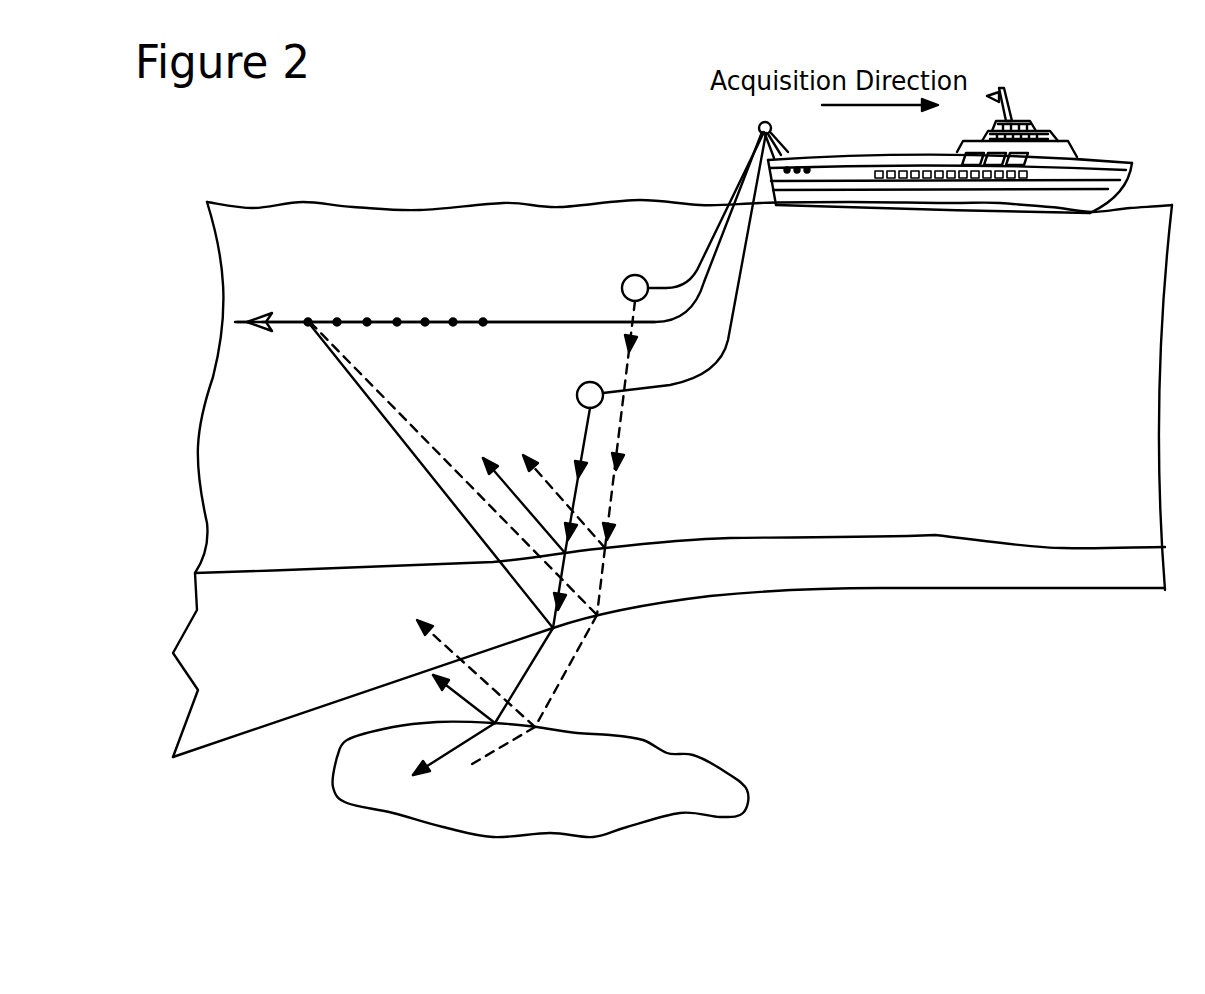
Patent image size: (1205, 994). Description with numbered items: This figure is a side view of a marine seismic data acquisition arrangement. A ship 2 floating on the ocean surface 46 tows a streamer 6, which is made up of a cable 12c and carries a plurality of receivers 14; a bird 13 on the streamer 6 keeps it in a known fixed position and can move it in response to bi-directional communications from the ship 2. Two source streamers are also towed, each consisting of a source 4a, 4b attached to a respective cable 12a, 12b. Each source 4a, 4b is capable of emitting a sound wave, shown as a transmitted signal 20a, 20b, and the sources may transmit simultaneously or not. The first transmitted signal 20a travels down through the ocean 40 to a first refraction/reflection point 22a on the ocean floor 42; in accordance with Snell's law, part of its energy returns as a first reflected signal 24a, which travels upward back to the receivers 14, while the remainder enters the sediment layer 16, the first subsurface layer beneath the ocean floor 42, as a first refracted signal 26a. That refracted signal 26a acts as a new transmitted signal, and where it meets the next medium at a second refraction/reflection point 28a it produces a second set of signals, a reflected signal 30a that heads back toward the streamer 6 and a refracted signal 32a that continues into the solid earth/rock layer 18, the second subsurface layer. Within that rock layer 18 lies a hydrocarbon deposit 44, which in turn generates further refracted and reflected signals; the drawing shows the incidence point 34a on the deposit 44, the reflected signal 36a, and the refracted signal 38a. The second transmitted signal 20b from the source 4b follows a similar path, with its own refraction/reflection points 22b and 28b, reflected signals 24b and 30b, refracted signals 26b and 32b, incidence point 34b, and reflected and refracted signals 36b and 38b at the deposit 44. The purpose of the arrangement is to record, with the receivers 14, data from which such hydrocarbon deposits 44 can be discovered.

The ship 2 is at (1105, 158).
The first source 4a is at (622, 288).
The second source 4b is at (578, 388).
The streamer 6 is at (462, 298).
The first source cable 12a is at (705, 249).
The second source cable 12b is at (722, 357).
The streamer tow cable 12c is at (518, 320).
The bird 13 is at (270, 318).
The receivers 14 is at (310, 318).
The sediment layer 16 is at (988, 568).
The solid earth/rock layer 18 is at (974, 653).
The first transmitted signal 20a is at (620, 423).
The second transmitted signal 20b is at (583, 443).
The first refraction/reflection point 22a is at (610, 537).
The seafloor reflection point of second wave 22b is at (565, 540).
The first reflected signal 24a is at (547, 485).
The reflected wave from second source 24b is at (503, 480).
The first refracted signal 26a is at (609, 561).
The transmitted wave from second source 26b is at (567, 572).
The second refraction/reflection point 28a is at (601, 617).
The layer boundary incidence point of second wave 28b is at (552, 626).
The reflected signal 30a is at (430, 443).
The reflected ray path to receivers from second source 30b is at (415, 457).
The refracted signal 32a is at (577, 650).
The transmitted wave in layer from second source 32b is at (538, 652).
The incidence point on salt body of first wave 34a is at (538, 728).
The incidence point on salt body of second wave 34b is at (476, 694).
The reflected wave from salt body, first source 36a is at (475, 657).
The reflected wave from salt body, second source 36b is at (446, 700).
The transmitted wave into salt body, first source 38a is at (490, 752).
The transmitted wave into salt body, second source 38b is at (450, 750).
The ocean 40 is at (968, 352).
The ocean floor 42 is at (933, 543).
The hydrocarbon deposit 44 is at (688, 754).
The ocean surface 46 is at (304, 200).